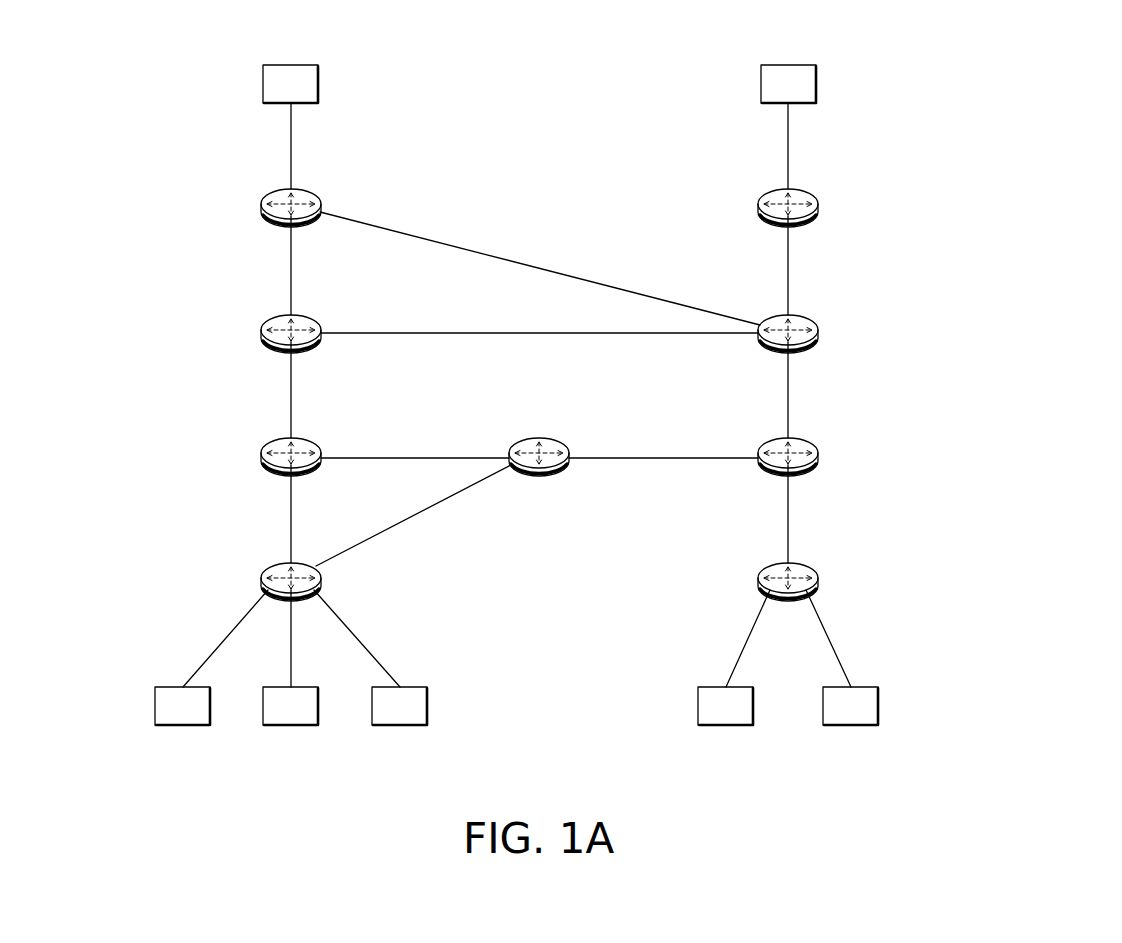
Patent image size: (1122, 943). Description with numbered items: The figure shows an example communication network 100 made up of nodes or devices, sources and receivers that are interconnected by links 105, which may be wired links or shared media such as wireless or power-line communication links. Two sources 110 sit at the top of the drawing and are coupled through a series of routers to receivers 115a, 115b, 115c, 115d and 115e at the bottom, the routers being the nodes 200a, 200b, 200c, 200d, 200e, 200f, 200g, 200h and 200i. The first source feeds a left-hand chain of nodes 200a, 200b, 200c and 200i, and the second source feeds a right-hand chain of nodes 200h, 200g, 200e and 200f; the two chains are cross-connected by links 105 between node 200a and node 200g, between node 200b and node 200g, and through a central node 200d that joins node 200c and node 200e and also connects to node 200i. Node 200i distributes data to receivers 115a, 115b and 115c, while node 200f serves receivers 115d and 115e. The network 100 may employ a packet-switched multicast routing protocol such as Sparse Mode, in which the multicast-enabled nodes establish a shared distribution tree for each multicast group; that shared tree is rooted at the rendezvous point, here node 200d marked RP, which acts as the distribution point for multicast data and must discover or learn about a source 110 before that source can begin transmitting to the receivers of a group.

The communication network 100 is at (1024, 82).
The links 105 is at (296, 152).
The sources 110 is at (285, 60).
The receiver 115a is at (180, 729).
The receiver 115b is at (289, 729).
The receiver 115c is at (398, 729).
The receiver 115d is at (721, 729).
The receiver 115e is at (846, 729).
The node 200a is at (324, 200).
The node 200b is at (324, 323).
The node 200c is at (324, 472).
The rendezvous point node 200d is at (572, 472).
The node 200e is at (822, 448).
The node 200f is at (822, 571).
The node 200g is at (822, 323).
The node 200h is at (822, 200).
The node 200i is at (324, 585).